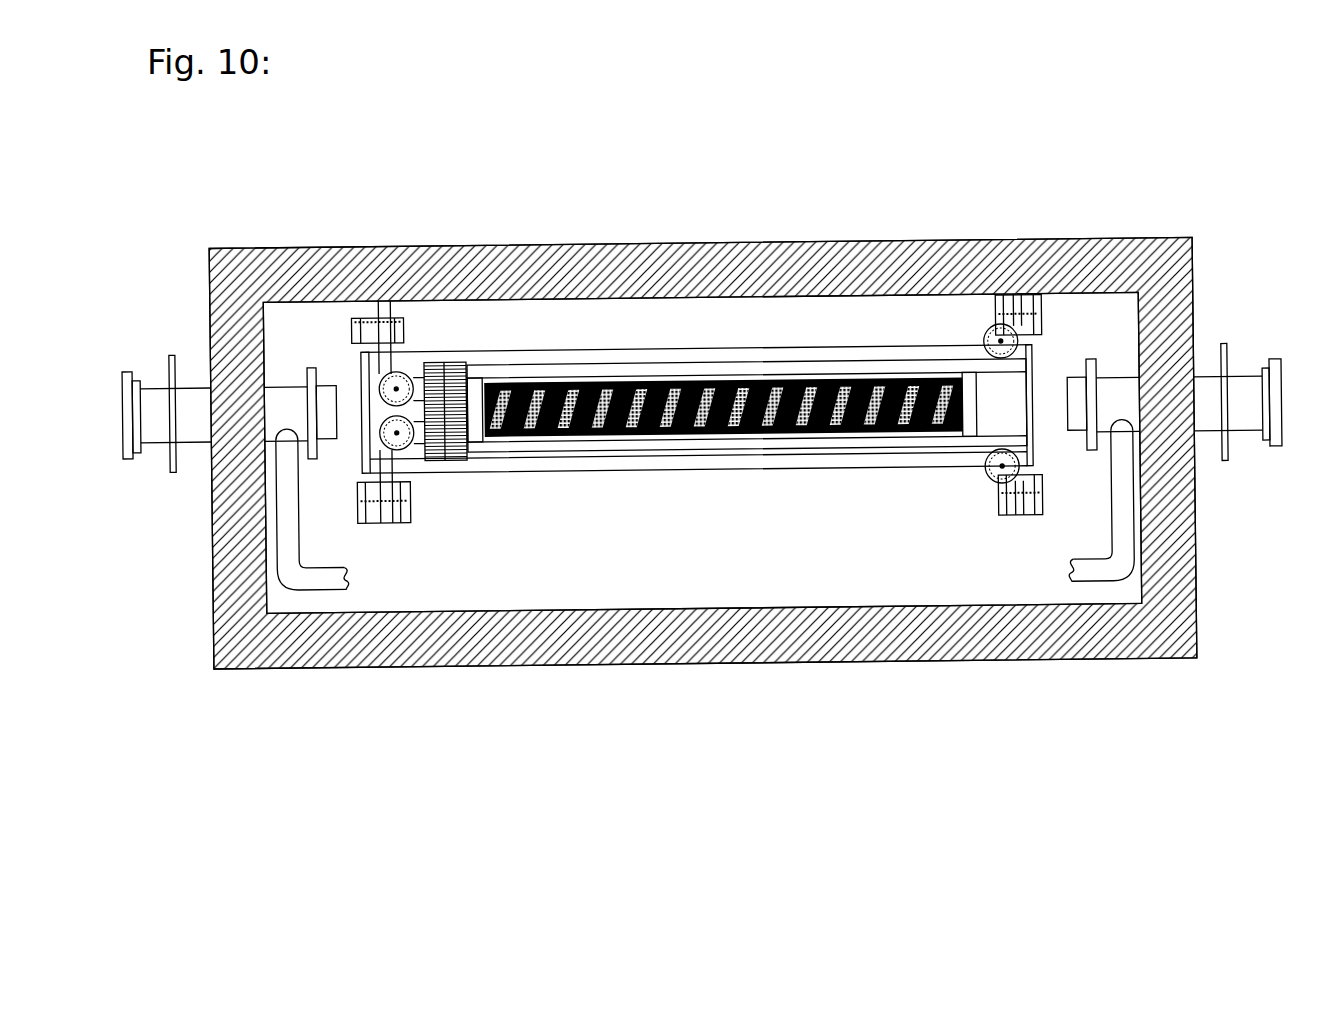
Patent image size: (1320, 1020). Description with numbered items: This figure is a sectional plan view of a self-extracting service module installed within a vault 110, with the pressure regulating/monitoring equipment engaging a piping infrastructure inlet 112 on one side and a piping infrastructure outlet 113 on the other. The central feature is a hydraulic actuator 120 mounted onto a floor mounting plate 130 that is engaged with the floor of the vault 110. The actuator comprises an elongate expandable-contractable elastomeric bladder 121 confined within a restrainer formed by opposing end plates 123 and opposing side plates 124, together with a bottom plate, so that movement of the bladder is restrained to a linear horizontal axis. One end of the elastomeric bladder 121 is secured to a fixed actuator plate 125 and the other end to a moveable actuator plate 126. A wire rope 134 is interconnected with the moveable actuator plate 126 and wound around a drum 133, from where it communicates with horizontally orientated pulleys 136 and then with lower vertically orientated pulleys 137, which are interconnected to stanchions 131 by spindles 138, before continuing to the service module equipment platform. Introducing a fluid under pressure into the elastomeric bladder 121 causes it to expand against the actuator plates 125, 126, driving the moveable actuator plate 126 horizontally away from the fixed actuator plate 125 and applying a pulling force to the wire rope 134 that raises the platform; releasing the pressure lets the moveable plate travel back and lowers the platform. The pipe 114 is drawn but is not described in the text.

The vault 110 is at (208, 292).
The piping infrastructure inlet 112 is at (162, 380).
The piping infrastructure outlet 113 is at (1243, 376).
The pipe 114 is at (277, 502).
The hydraulic actuator 120 is at (747, 320).
The elastomeric bladder 121 is at (802, 385).
The end plates 123 is at (472, 363).
The side plates 124 is at (653, 365).
The fixed actuator plate 125 is at (483, 375).
The moveable actuator plate 126 is at (975, 445).
The floor mounting plate 130 is at (547, 473).
The stanchions 131 is at (353, 322).
The drum 133 is at (455, 472).
The wire rope 134 is at (940, 355).
The horizontally orientated pulleys 136 is at (402, 308).
The lower vertically orientated pulleys 137 is at (372, 322).
The spindles 138 is at (358, 334).